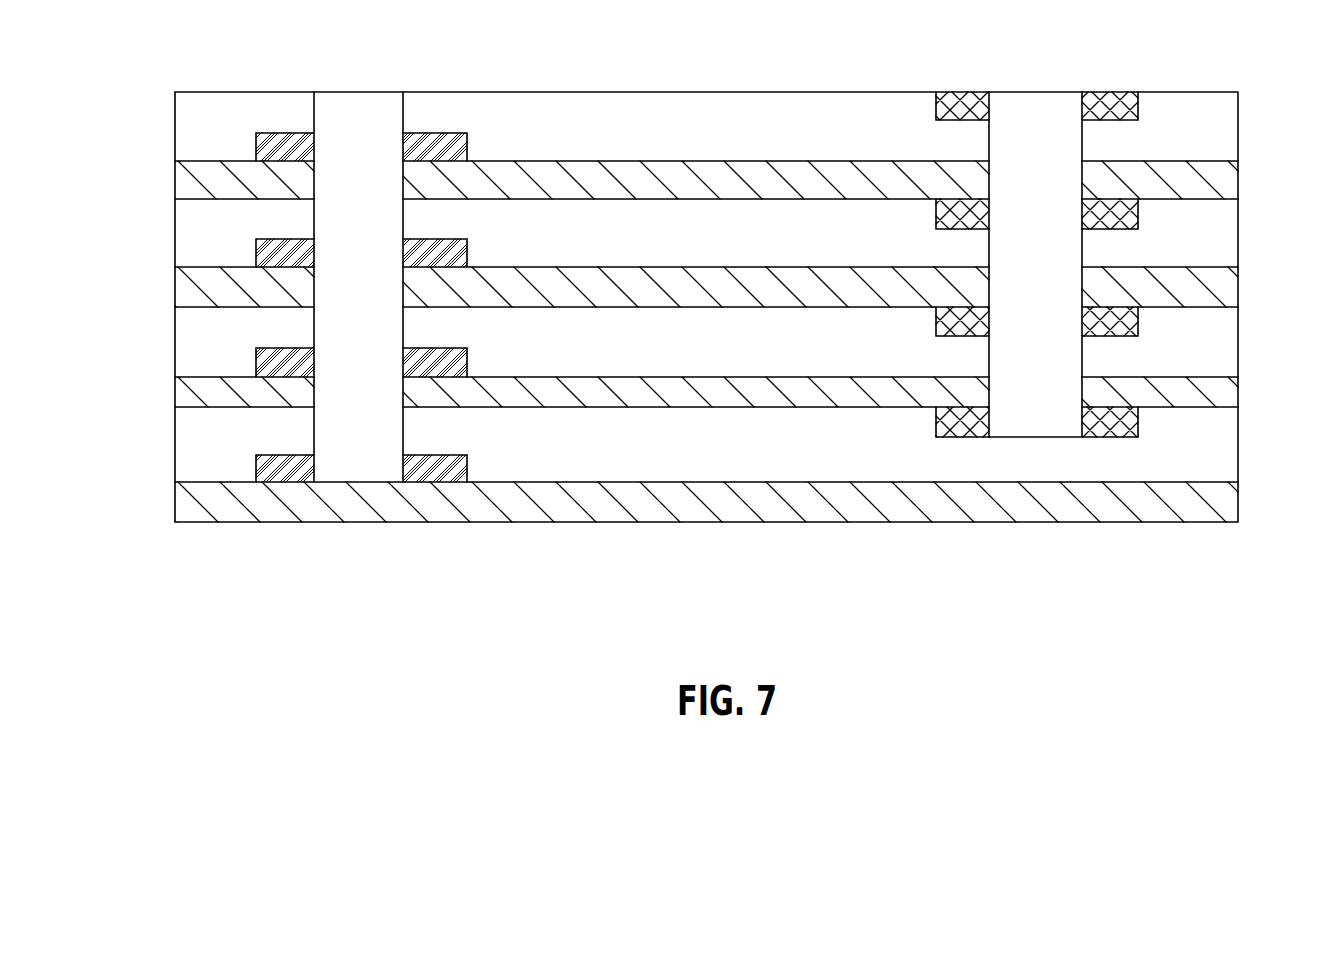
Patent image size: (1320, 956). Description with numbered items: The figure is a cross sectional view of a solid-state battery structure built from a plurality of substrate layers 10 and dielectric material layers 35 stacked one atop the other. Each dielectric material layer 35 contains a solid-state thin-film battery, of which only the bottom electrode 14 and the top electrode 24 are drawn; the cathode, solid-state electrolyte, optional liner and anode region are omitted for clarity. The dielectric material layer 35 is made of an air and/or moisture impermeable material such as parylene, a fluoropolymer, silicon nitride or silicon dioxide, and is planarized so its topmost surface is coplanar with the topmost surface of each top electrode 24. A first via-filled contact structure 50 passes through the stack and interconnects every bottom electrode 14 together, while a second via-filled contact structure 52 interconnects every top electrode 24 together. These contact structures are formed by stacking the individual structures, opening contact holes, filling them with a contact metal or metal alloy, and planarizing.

The substrate layer 10 is at (578, 287).
The bottom electrode 14 is at (267, 470).
The top electrode 24 is at (1130, 428).
The dielectric material layer 35 is at (708, 458).
The first via-filled contact structure 50 is at (376, 293).
The second via-filled contact structure 52 is at (1054, 290).